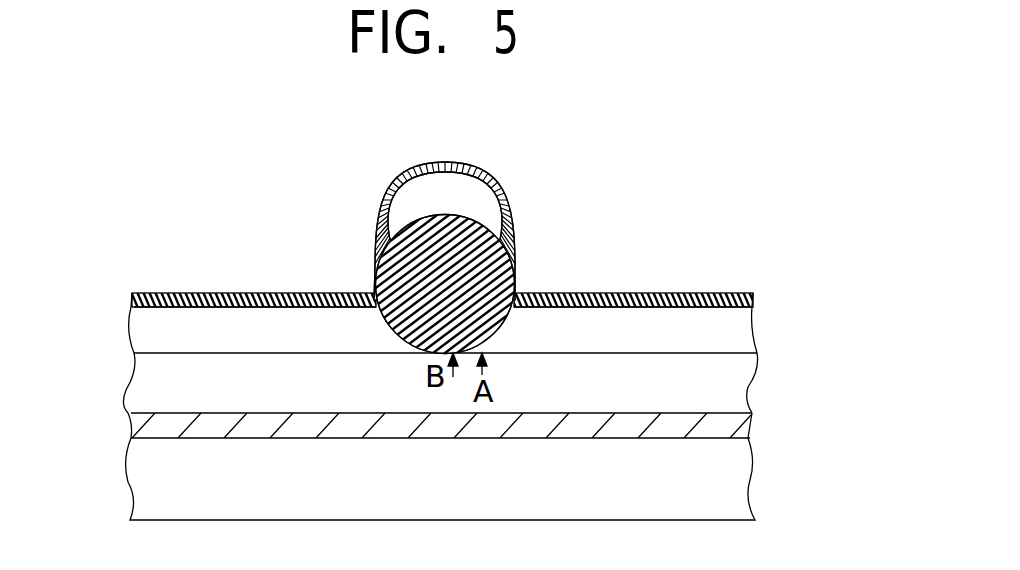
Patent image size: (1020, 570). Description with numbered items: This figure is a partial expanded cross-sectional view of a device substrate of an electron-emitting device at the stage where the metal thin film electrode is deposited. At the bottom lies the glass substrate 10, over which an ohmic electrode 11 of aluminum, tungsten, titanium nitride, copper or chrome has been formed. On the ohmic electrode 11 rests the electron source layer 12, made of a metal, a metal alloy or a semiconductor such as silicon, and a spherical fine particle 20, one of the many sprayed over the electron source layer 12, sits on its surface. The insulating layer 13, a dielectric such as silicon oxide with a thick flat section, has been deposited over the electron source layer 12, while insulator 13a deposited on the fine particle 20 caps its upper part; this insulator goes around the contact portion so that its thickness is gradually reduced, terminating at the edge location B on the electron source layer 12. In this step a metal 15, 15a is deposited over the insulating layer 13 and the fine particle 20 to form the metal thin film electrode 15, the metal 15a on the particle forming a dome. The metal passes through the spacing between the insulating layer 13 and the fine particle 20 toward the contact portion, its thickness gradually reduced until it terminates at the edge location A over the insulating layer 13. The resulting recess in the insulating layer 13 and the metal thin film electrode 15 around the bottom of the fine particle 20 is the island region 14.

The glass substrate 10 is at (740, 495).
The ohmic electrode 11 is at (740, 432).
The electron source layer 12 is at (742, 390).
The insulating layer 13 is at (742, 342).
The insulator 13a is at (383, 233).
The island region 14 is at (378, 330).
The metal thin film electrode 15 is at (755, 300).
The metal 15a is at (482, 174).
The spherical fine particles 20 is at (501, 284).